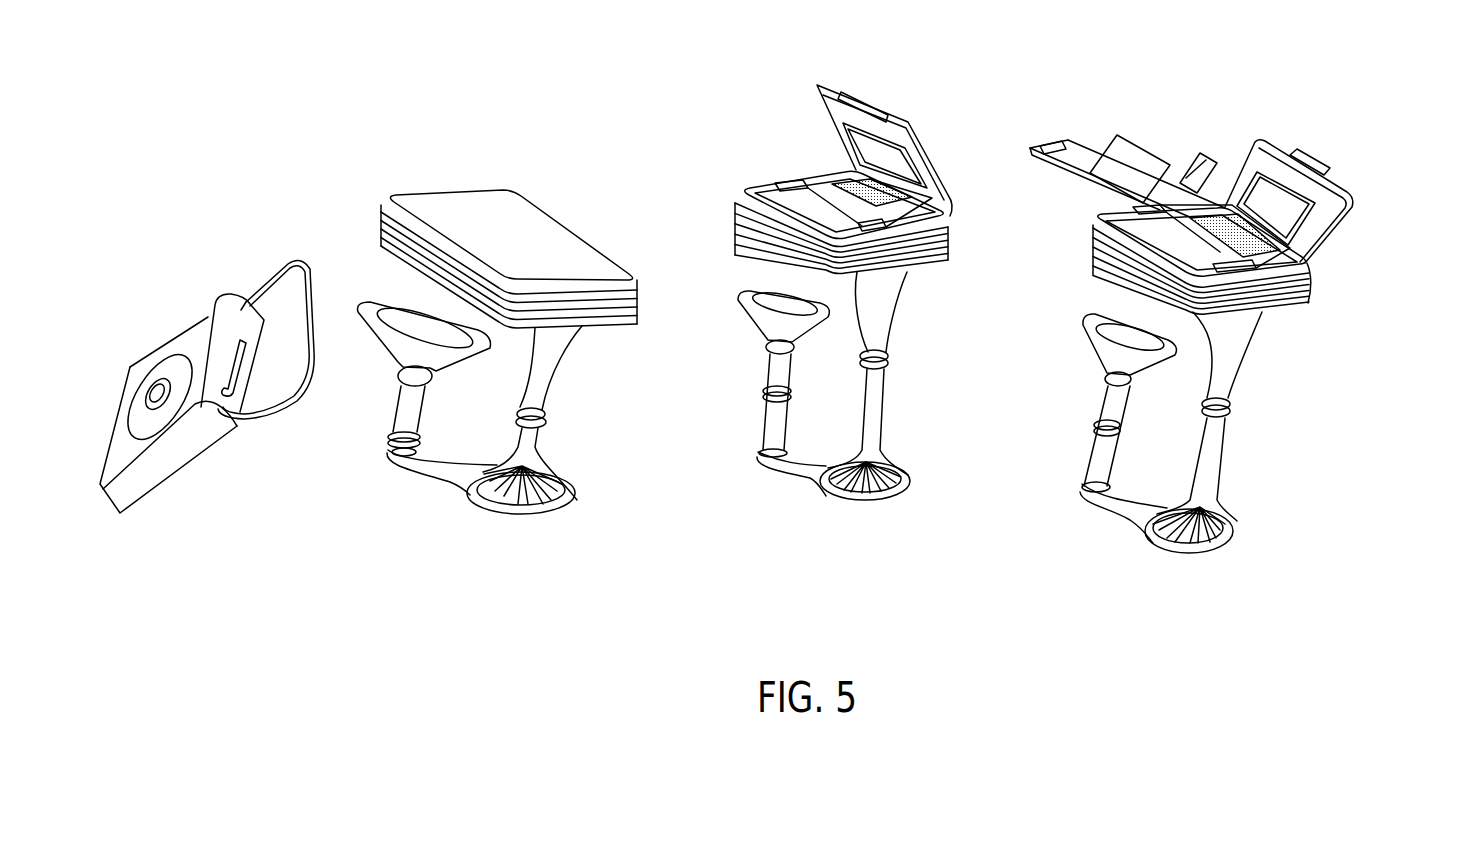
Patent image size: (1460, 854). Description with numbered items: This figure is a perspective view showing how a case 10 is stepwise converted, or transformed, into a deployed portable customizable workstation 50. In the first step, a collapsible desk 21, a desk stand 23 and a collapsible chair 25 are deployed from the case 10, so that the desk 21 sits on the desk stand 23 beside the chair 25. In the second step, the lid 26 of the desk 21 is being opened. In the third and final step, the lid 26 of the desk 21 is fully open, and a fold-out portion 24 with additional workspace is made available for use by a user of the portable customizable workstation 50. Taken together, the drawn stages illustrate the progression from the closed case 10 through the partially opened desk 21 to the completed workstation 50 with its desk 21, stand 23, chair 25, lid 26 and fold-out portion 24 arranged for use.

The case 10 is at (243, 293).
The collapsible desk 21 is at (612, 330).
The desk stand 23 is at (565, 492).
The fold-out portion 24 is at (1070, 136).
The collapsible chair 25 is at (378, 307).
The lid 26 is at (851, 88).
The portable customizable workstation 50 is at (1335, 177).